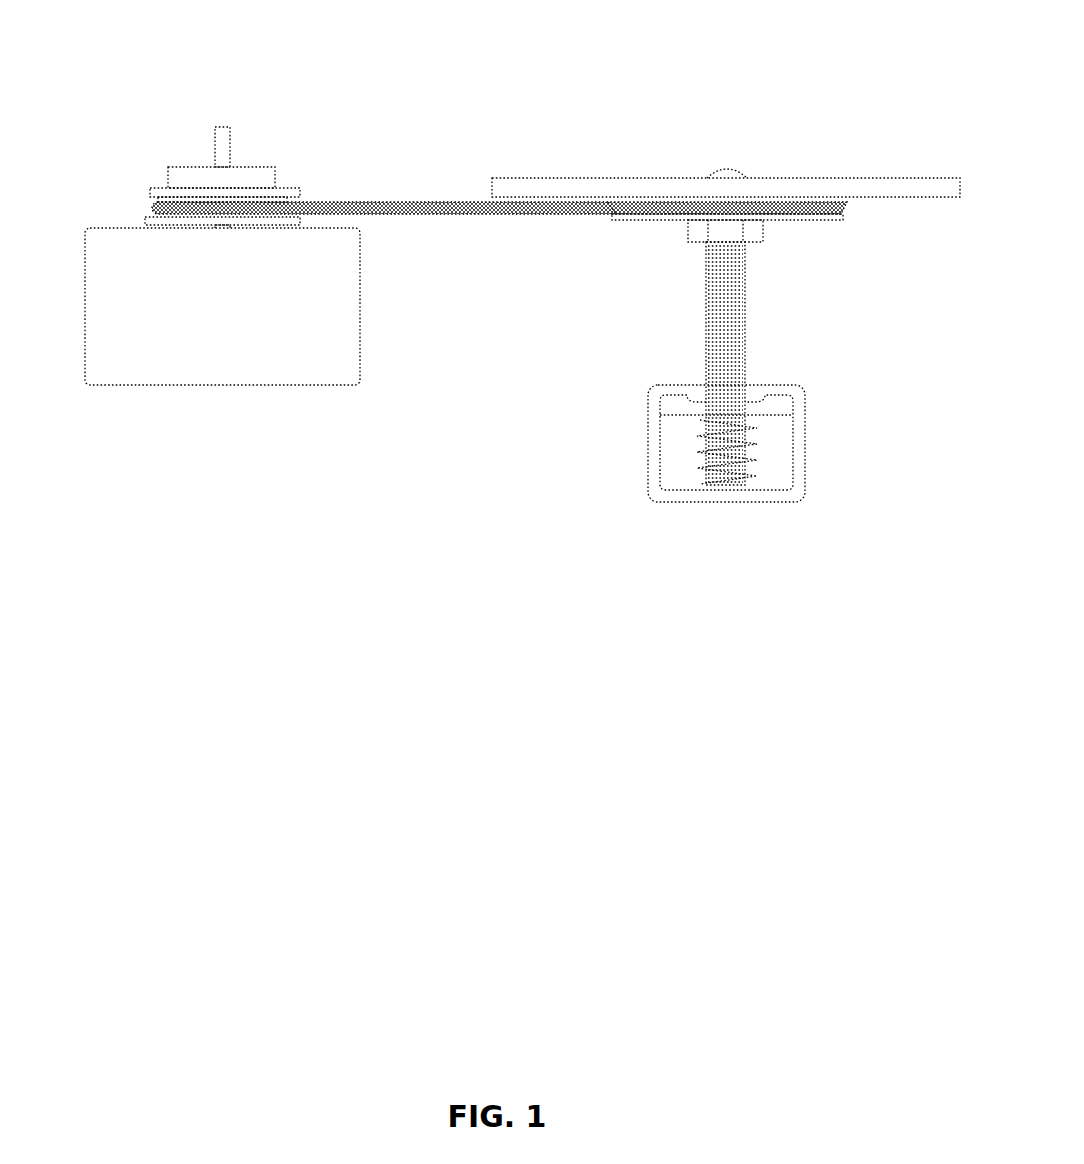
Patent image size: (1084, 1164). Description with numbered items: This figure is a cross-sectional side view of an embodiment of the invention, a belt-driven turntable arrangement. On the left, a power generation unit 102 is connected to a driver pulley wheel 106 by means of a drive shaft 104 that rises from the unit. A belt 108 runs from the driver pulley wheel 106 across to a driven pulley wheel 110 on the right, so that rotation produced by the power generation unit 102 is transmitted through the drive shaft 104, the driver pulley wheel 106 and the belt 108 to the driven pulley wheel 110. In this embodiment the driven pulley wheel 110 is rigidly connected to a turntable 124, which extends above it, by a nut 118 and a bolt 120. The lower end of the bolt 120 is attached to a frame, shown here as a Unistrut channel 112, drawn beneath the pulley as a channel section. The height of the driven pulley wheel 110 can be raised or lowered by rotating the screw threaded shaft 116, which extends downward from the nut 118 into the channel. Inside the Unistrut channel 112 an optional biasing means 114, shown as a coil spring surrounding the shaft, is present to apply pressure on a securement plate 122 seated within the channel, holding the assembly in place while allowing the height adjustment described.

The power generation unit 102 is at (230, 365).
The drive shaft 104 is at (230, 120).
The driver pulley wheel 106 is at (150, 192).
The belt 108 is at (430, 200).
The driven pulley wheel 110 is at (608, 217).
The Unistrut channel 112 is at (647, 430).
The biasing means 114 is at (720, 478).
The screw threaded shaft 116 is at (745, 365).
The nut 118 is at (757, 243).
The bolt 120 is at (725, 168).
The securement plate 122 is at (787, 410).
The turntable 124 is at (604, 175).